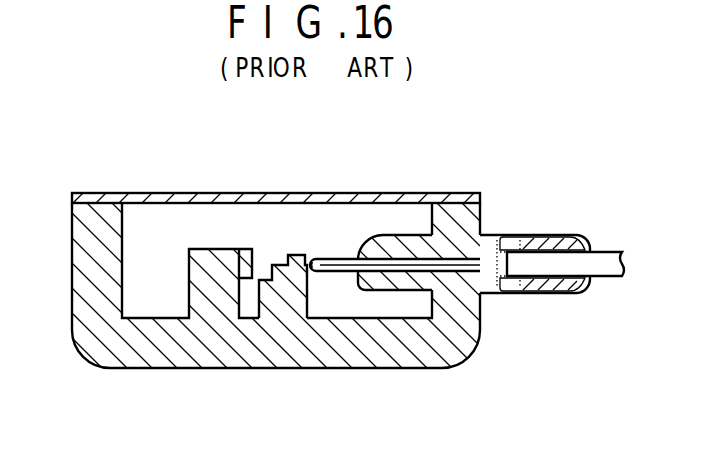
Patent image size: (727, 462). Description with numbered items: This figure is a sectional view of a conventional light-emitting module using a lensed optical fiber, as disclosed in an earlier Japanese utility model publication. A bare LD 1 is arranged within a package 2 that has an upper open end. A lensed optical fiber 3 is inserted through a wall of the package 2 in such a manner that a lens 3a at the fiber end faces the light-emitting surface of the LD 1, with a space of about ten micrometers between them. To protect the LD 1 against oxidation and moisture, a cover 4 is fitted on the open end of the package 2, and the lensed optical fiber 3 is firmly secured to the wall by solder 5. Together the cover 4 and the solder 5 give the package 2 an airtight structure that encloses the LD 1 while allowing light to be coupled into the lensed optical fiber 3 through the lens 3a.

The bare LD 1 is at (291, 254).
The package 2 is at (450, 332).
The lensed optical fiber 3 is at (407, 248).
The lens 3a is at (317, 259).
The cover 4 is at (181, 200).
The solder 5 is at (376, 235).